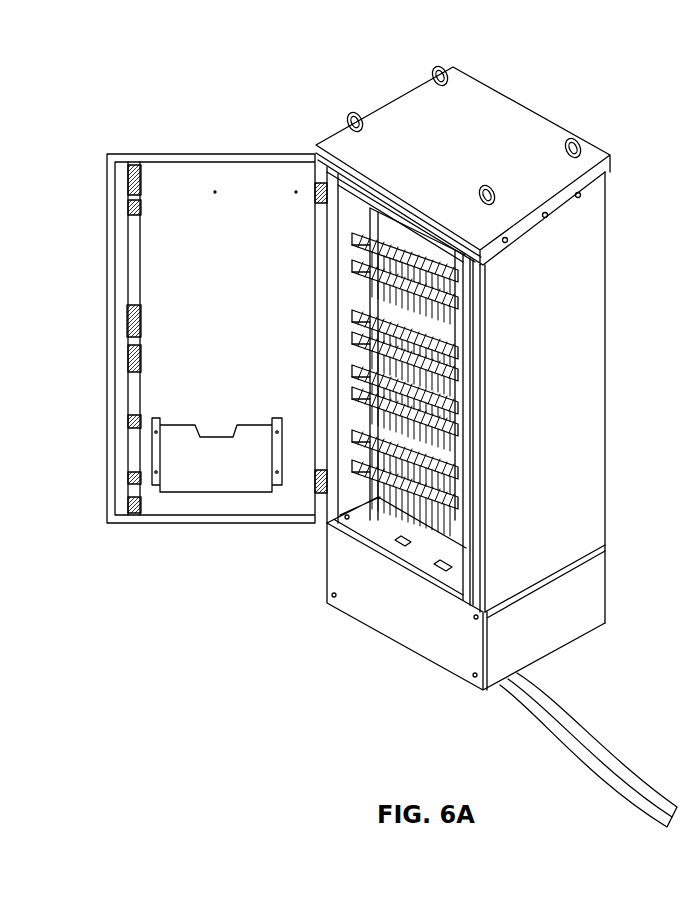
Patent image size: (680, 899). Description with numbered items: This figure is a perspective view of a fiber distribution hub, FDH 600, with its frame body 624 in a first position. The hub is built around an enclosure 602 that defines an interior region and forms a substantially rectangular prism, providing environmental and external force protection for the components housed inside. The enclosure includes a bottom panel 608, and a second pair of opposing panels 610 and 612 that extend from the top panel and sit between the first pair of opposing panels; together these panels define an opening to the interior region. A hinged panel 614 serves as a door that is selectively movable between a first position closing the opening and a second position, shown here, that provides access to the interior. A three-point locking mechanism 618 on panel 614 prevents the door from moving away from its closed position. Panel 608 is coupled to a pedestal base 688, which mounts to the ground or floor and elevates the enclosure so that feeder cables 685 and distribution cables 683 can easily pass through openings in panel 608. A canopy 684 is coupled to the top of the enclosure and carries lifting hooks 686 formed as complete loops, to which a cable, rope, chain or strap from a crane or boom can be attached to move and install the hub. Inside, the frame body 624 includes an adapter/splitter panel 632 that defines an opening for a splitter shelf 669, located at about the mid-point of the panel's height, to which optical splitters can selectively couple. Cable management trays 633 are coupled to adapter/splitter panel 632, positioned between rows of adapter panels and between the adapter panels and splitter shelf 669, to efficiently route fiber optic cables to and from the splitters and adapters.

The FDH 600 is at (522, 76).
The enclosure 602 is at (592, 418).
The panel 608 is at (377, 538).
The panel 610 is at (345, 298).
The panel 612 is at (598, 302).
The panel 614 is at (168, 190).
The three-point locking mechanism 618 is at (128, 188).
The frame body 624 is at (483, 397).
The adapter/splitter panel 632 is at (487, 480).
The cable management trays 633 is at (398, 236).
The splitter shelf 669 is at (375, 352).
The distribution cables 683 is at (568, 770).
The canopy 684 is at (510, 112).
The feeder cables 685 is at (573, 726).
The lifting hooks 686 is at (432, 72).
The pedestal base 688 is at (598, 580).